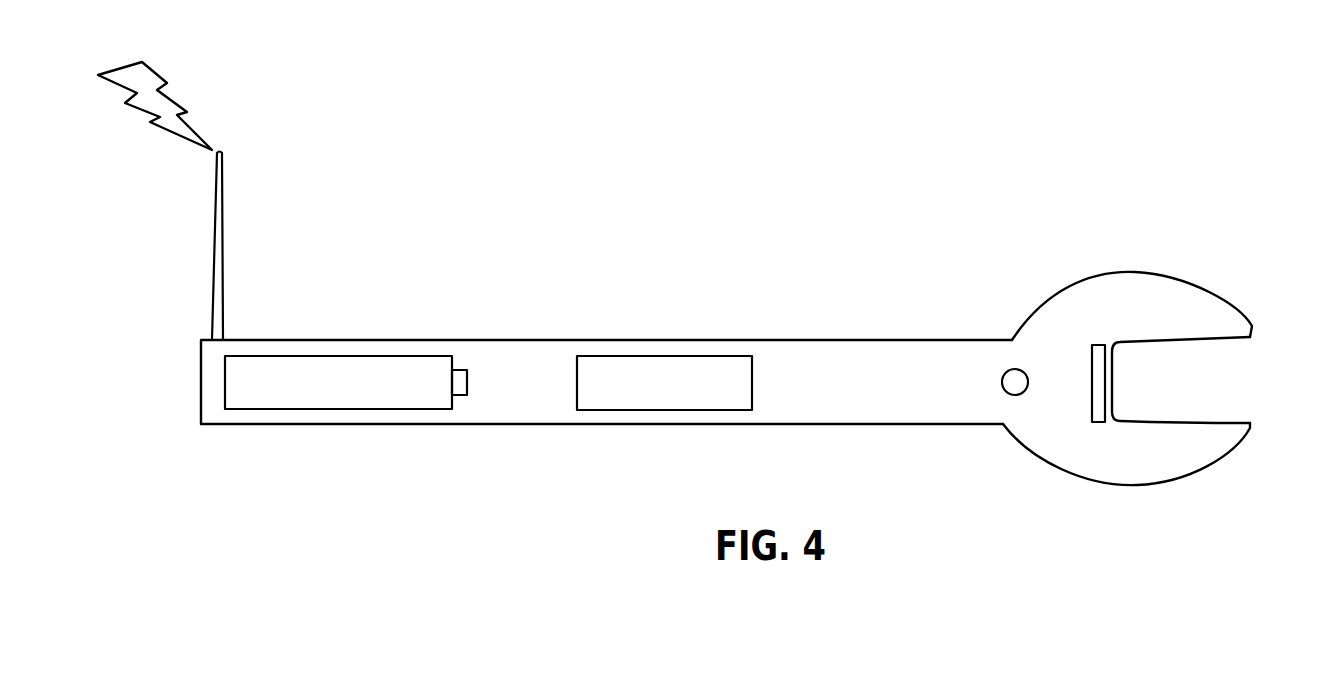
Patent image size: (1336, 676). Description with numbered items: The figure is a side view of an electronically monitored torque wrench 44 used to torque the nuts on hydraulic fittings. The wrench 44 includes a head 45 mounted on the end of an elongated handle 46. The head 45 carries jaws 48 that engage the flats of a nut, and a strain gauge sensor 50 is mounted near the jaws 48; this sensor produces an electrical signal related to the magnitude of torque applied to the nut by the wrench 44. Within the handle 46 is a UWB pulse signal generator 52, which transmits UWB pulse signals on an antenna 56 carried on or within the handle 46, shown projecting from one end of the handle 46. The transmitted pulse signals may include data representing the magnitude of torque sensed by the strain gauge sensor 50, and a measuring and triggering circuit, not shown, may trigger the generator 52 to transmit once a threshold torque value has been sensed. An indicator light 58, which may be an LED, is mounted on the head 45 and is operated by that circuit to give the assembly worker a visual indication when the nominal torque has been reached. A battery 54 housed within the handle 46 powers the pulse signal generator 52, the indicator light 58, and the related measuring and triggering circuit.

The electronically monitored torque wrench 44 is at (865, 269).
The head 45 is at (1195, 477).
The handle 46 is at (530, 424).
The jaws 48 is at (1209, 344).
The strain gauge sensor 50 is at (1097, 352).
The UWB pulse signal generator 52 is at (628, 388).
The battery 54 is at (328, 388).
The antenna 56 is at (218, 258).
The indicator light 58 is at (1015, 382).